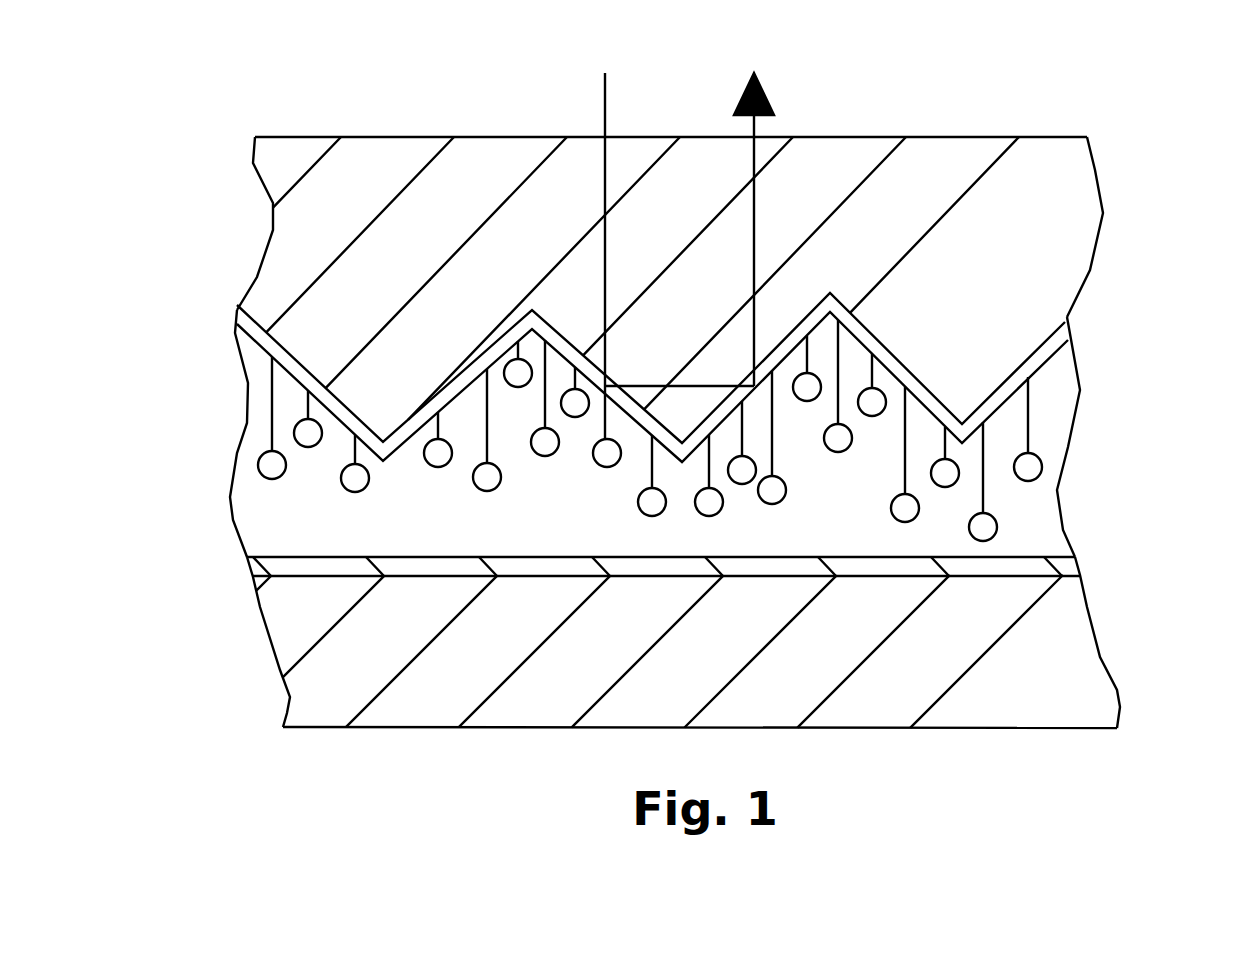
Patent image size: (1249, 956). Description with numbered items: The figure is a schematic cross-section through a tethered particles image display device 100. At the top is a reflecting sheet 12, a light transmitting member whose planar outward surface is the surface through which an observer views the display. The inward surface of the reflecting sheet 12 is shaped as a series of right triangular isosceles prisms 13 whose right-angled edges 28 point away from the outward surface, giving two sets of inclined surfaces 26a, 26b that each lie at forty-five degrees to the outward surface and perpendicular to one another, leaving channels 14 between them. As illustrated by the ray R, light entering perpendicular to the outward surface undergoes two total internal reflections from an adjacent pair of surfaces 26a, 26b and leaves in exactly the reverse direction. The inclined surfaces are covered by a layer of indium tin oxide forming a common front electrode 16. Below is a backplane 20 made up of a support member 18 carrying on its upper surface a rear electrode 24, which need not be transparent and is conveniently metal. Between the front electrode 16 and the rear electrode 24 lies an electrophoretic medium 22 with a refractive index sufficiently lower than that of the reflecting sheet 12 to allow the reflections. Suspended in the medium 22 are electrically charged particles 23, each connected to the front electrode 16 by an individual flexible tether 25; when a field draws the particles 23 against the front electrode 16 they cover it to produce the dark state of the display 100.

The tethered particles image display device 100 is at (155, 325).
The reflecting sheet 12 is at (397, 250).
The right triangular isosceles prisms 13 is at (368, 394).
The channels 14 is at (823, 343).
The front electrode 16 is at (902, 360).
The inclined surfaces 26a is at (883, 337).
The inclined surfaces 26b is at (1022, 360).
The right-angled edges 28 is at (965, 421).
The electrophoretic medium 22 is at (1025, 513).
The electrically charged particles 23 is at (985, 529).
The tether 25 is at (983, 452).
The rear electrode 24 is at (990, 567).
The support member 18 is at (1015, 638).
The backplane 20 is at (212, 625).
The ray R is at (689, 234).